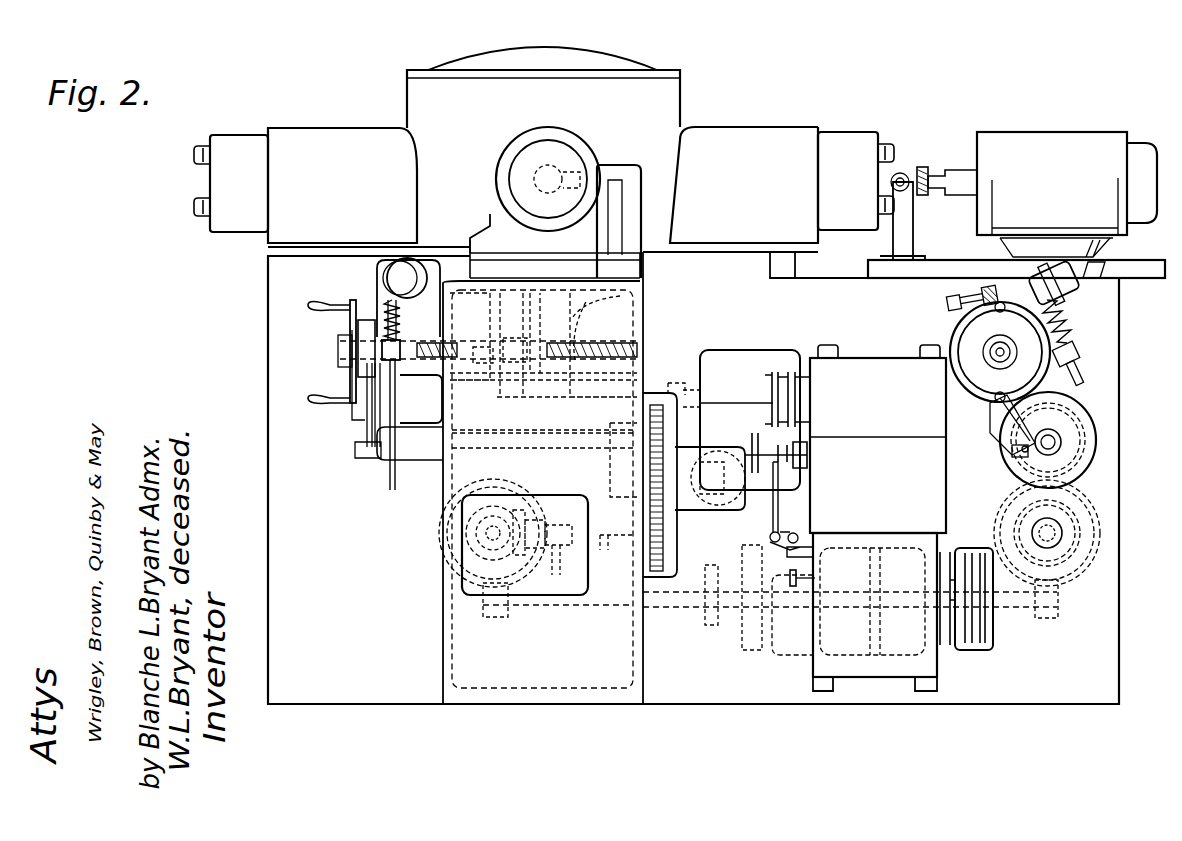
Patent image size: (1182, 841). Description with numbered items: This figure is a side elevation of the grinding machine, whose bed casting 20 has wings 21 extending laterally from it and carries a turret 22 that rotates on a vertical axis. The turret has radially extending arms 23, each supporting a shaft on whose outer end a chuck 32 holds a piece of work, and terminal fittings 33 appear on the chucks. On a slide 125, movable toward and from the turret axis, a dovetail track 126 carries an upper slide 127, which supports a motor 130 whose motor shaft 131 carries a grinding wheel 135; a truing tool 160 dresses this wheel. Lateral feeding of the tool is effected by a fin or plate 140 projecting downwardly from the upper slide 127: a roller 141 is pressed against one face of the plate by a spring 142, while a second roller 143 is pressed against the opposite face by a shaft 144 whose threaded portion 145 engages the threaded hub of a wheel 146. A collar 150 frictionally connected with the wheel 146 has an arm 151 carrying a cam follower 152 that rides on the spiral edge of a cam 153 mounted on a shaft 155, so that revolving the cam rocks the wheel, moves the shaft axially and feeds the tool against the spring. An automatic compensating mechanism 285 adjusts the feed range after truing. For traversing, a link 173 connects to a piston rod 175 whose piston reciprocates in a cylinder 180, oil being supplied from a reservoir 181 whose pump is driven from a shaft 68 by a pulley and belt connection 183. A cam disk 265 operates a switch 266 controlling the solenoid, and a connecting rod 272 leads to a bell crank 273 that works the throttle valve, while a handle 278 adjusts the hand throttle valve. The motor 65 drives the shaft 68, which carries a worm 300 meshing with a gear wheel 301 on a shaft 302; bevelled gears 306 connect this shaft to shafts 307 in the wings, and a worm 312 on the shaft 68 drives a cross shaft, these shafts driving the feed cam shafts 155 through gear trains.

The bed casting 20 is at (268, 425).
The wings 21 is at (460, 690).
The turret 22 is at (425, 110).
The radially extending arms 23 is at (285, 132).
The chuck 32 is at (544, 182).
The terminals 33 is at (200, 207).
The motor 130 is at (565, 170).
The truing tool 160 is at (585, 183).
The upper slide 127 is at (500, 222).
The second roller 143 is at (555, 256).
The fin or plate 140 is at (540, 305).
The shaft 144 is at (430, 282).
The collar 150 is at (367, 338).
The threaded portion 145 is at (412, 381).
The spring 142 is at (590, 390).
The link 173 is at (545, 395).
The roller 141 is at (578, 330).
The wheel 146 is at (338, 328).
The arm 151 is at (362, 420).
The cam follower 152 is at (376, 456).
The cam 153 is at (370, 440).
The shaft 155 is at (400, 470).
The grinding wheel 135 is at (922, 165).
The motor shaft 131 is at (950, 165).
The slide 125 is at (915, 258).
The dovetail track 126 is at (1095, 280).
The automatic compensating mechanism 285 is at (1090, 313).
The cam disk 265 is at (668, 400).
The piston rod 175 is at (743, 352).
The switch 266 is at (687, 465).
The cylinder 180 is at (878, 439).
The reservoir 181 is at (885, 665).
The pulley and belt connection 183 is at (975, 645).
The shaft 68 is at (1018, 607).
The worm 312 is at (1050, 618).
The motor 65 is at (795, 645).
The bell crank 273 is at (796, 532).
The connecting rod 272 is at (772, 520).
The handle 278 is at (790, 580).
The worm 300 is at (497, 620).
The gear wheel 301 is at (470, 572).
The shaft 302 is at (478, 538).
The bevelled gear 306 is at (520, 512).
The shaft 307 is at (603, 550).